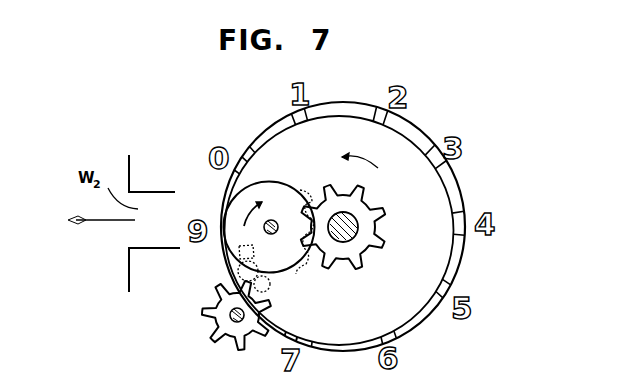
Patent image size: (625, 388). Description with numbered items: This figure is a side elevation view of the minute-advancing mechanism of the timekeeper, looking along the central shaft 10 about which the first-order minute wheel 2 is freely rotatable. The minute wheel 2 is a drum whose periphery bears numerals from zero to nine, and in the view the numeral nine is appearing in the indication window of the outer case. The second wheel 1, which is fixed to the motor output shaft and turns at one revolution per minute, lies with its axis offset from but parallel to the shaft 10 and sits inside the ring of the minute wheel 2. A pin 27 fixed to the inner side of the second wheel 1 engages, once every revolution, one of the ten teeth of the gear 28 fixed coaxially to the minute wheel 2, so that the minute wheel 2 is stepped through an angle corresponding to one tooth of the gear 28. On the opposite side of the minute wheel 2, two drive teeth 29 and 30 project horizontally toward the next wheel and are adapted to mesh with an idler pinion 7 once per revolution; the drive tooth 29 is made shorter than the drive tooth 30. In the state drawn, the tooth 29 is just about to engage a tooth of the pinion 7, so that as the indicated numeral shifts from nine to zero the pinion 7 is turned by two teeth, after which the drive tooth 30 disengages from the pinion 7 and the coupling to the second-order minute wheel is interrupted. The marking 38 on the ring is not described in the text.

The second wheel 1 is at (290, 268).
The first-order minute wheel 2 is at (428, 320).
The idler pinion 7 is at (206, 333).
The central shaft 10 is at (358, 222).
The pin 27 is at (301, 257).
The gear 28 is at (376, 252).
The drive tooth 29 is at (240, 270).
The drive tooth 30 is at (238, 252).
The ring segment 38 is at (311, 338).